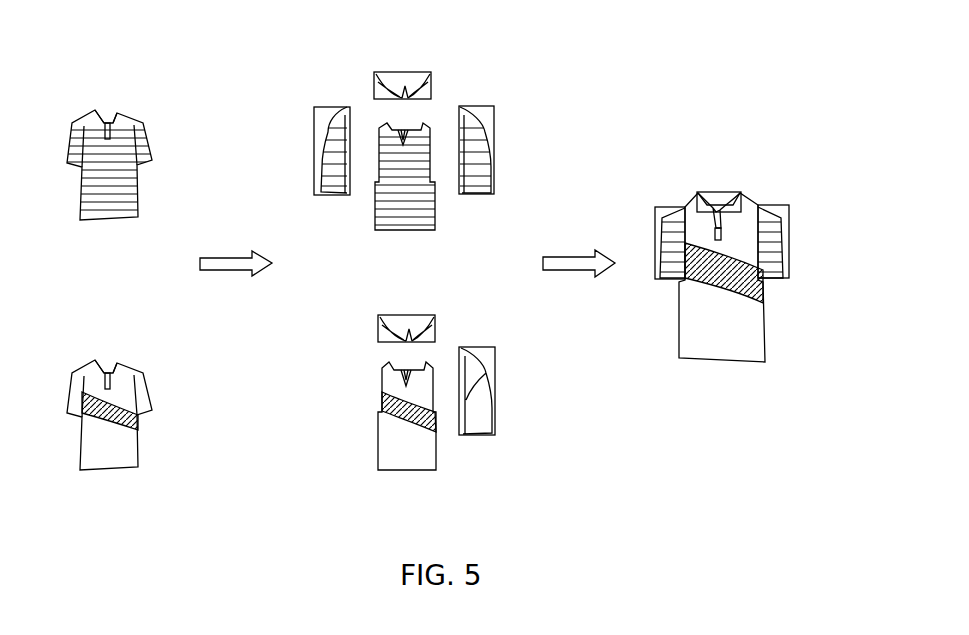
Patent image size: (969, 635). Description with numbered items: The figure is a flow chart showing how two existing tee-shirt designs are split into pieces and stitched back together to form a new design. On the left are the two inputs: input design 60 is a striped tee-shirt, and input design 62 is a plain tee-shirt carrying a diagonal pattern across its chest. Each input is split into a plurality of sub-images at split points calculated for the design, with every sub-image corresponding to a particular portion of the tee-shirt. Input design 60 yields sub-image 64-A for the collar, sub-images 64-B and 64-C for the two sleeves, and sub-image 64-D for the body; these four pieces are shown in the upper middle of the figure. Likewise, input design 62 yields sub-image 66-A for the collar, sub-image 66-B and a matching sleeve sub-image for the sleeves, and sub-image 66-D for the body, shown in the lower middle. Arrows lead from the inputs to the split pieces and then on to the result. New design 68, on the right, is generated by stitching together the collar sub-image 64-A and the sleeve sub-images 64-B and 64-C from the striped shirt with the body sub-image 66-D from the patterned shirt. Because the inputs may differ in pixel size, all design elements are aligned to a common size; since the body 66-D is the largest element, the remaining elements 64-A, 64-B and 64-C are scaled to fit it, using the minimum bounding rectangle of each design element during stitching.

The input design 60 is at (152, 135).
The input design 62 is at (152, 380).
The sub-image 64-A is at (404, 72).
The sub-image 64-B is at (494, 159).
The sub-image 64-C is at (314, 138).
The sub-image 64-D is at (390, 231).
The sub-image 66-A is at (568, 337).
The sub-image 66-B is at (494, 388).
The sub-image 66-D is at (407, 470).
The new design 68 is at (750, 200).